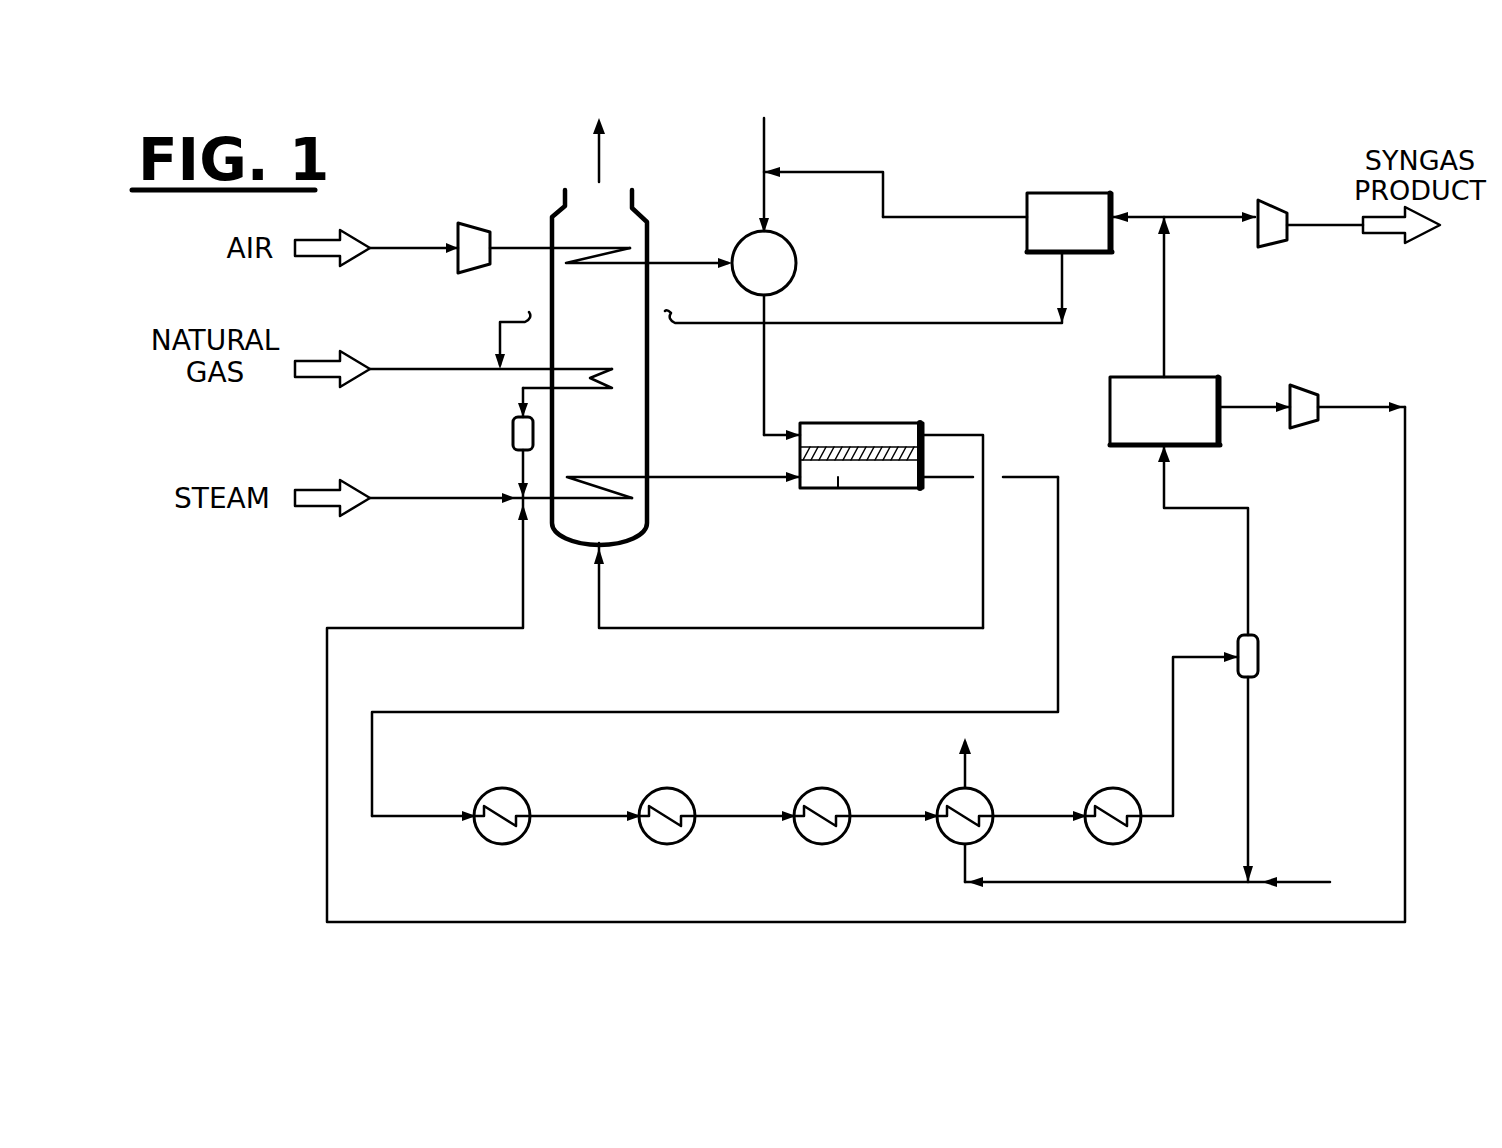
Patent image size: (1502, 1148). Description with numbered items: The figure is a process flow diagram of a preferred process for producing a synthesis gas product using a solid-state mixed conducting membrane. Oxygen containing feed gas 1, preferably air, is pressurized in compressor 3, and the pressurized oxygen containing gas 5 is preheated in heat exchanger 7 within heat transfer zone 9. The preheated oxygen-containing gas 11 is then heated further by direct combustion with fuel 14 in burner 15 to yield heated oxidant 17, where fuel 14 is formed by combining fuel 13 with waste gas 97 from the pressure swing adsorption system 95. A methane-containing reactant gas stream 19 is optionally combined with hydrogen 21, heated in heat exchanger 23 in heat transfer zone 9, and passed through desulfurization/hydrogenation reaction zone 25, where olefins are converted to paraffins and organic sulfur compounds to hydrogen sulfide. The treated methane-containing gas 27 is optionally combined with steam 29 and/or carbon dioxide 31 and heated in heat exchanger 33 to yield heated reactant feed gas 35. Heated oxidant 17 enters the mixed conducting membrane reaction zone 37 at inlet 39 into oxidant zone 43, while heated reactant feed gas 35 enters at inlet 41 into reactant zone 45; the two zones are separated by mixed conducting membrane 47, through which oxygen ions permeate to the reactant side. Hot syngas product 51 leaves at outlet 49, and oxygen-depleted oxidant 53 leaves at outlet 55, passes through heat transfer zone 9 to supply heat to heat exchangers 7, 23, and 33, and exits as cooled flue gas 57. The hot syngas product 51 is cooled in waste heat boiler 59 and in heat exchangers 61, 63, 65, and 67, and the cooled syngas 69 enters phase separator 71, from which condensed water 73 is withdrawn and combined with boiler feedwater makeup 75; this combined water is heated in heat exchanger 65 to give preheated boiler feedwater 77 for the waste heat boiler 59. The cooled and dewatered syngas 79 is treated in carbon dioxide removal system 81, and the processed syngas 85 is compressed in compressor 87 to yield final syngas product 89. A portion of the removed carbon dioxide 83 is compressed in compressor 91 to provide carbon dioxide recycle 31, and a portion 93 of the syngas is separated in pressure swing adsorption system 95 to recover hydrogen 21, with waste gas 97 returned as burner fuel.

The oxygen containing feed gas 1 is at (413, 248).
The compressor 3 is at (472, 223).
The pressurized oxygen containing gas 5 is at (519, 246).
The heat exchanger 7 is at (602, 264).
The heat transfer zone 9 is at (665, 437).
The preheated oxygen-containing gas 11 is at (690, 262).
The fuel 13 is at (766, 145).
The fuel 14 is at (766, 203).
The burner 15 is at (796, 262).
The heated oxidant 17 is at (766, 357).
The methane-containing reactant gas stream 19 is at (438, 372).
The hydrogen 21 is at (497, 322).
The heat exchanger 23 is at (592, 378).
The desulfurization/hydrogenation reaction zone 25 is at (511, 434).
The treated methane-containing gas 27 is at (520, 464).
The steam 29 is at (460, 504).
The carbon dioxide 31 is at (520, 586).
The heat exchanger 33 is at (600, 476).
The heated reactant feed gas 35 is at (686, 481).
The mixed conducting membrane reaction zone 37 is at (878, 447).
The inlet 39 is at (767, 435).
The inlet 41 is at (782, 480).
The oxidant zone 43 is at (866, 422).
The reactant zone 45 is at (838, 488).
The mixed conducting membrane 47 is at (882, 460).
The outlet 49 is at (940, 477).
The hot syngas product 51 is at (1060, 586).
The oxygen-depleted oxidant 53 is at (982, 594).
The outlet 55 is at (970, 435).
The cooled flue gas 57 is at (601, 163).
The waste heat boiler 59 is at (490, 788).
The heat exchanger 61 is at (662, 788).
The heat exchanger 63 is at (822, 788).
The heat exchanger 65 is at (972, 794).
The heat exchanger 67 is at (1128, 790).
The cooled syngas 69 is at (1173, 674).
The phase separator 71 is at (1258, 655).
The condensed water 73 is at (1250, 752).
The boiler feedwater makeup 75 is at (1282, 882).
The preheated boiler feedwater 77 is at (960, 754).
The cooled and dewatered syngas 79 is at (1250, 578).
The carbon dioxide removal system 81 is at (1150, 376).
The carbon dioxide 83 is at (1250, 404).
The processed syngas 85 is at (1164, 286).
The compressor 87 is at (1270, 248).
The final syngas product 89 is at (1335, 226).
The compressor 91 is at (1312, 388).
The portion of syngas 93 is at (1140, 216).
The pressure swing adsorption system 95 is at (1068, 193).
The waste gas 97 is at (952, 217).